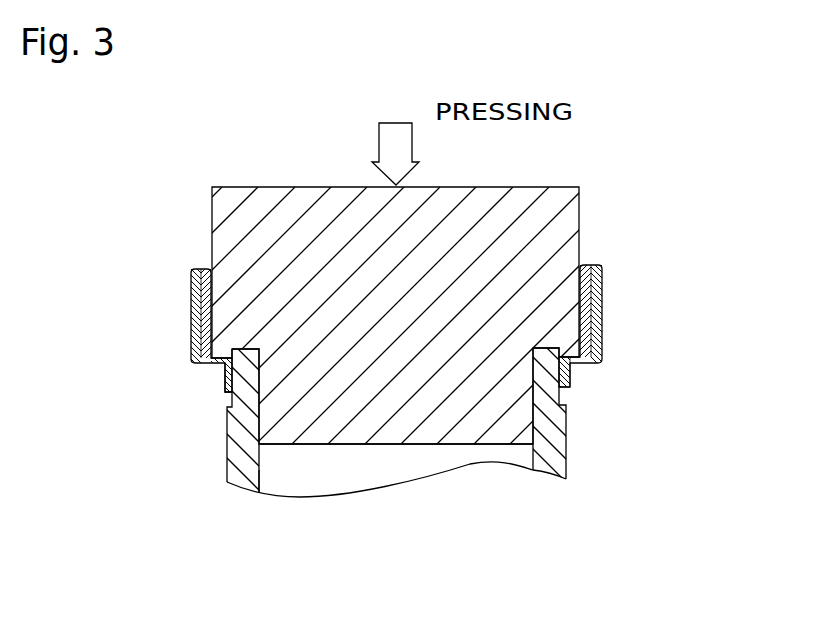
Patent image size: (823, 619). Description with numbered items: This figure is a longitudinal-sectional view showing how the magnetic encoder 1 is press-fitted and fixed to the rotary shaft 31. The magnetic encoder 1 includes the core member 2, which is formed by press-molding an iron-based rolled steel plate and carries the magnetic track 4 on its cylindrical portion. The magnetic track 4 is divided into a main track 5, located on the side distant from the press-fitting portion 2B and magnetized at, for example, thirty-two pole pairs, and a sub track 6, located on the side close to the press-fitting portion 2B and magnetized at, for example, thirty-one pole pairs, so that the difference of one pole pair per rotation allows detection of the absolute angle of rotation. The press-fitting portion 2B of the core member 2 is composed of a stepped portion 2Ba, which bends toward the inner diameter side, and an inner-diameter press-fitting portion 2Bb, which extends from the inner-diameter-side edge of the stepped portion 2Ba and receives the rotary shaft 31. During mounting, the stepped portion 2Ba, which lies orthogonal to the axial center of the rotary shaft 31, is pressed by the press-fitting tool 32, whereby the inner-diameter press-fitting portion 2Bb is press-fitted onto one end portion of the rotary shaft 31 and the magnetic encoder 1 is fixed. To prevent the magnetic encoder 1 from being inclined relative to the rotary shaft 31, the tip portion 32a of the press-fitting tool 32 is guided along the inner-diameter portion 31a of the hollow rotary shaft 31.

The magnetic encoder 1 is at (626, 327).
The core member 2 is at (210, 388).
The press-fitting portion 2B is at (585, 416).
The stepped portion 2Ba is at (577, 371).
The inner-diameter press-fitting portion 2Bb is at (568, 384).
The magnetic track 4 is at (172, 327).
The main track 5 is at (188, 268).
The sub track 6 is at (188, 344).
The rotary shaft 31 is at (228, 453).
The inner-diameter portion 31a is at (258, 478).
The press-fitting tool 32 is at (572, 208).
The tip portion 32a is at (460, 432).